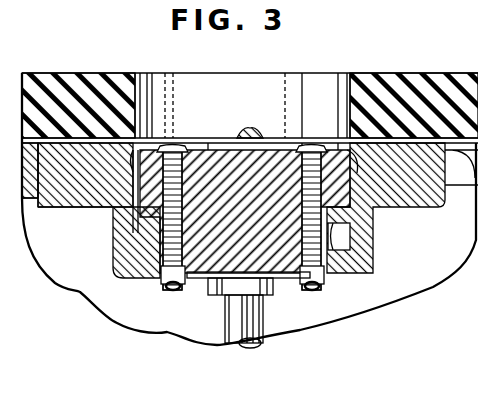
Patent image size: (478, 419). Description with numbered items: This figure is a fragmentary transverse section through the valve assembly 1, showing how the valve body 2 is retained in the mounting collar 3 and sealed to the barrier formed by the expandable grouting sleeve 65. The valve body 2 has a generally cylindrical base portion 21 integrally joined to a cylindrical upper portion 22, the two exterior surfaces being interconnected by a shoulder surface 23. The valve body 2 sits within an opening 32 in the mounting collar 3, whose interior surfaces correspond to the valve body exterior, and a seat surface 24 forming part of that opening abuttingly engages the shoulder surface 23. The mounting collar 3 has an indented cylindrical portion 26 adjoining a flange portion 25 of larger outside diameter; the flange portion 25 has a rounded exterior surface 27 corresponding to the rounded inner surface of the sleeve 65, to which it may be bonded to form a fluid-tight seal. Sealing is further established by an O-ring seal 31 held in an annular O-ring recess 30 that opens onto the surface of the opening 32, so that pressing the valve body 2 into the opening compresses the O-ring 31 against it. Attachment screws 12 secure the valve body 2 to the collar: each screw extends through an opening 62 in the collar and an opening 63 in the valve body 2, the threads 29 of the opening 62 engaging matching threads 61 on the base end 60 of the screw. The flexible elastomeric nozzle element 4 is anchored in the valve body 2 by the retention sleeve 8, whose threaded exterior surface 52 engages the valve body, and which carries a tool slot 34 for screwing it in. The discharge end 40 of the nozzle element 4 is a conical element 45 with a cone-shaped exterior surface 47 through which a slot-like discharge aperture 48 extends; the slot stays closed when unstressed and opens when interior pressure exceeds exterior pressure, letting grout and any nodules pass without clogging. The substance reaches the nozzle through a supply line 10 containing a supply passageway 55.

The valve assembly 1 is at (309, 72).
The valve body 2 is at (200, 142).
The mounting collar 3 is at (443, 268).
The nozzle element 4 is at (258, 132).
The retention sleeve 8 is at (217, 308).
The supply line 10 is at (233, 338).
The attachment screw 12 is at (180, 142).
The base portion 21 is at (157, 242).
The upper portion 22 is at (147, 202).
The shoulder surface 23 is at (343, 223).
The seat surface 24 is at (402, 208).
The flange portion 25 is at (37, 231).
The indented cylindrical portion 26 is at (110, 267).
The rounded exterior surface 27 is at (67, 140).
The threads 29 is at (167, 281).
The annular O-ring recess 30 is at (306, 141).
The O-ring seal 31 is at (153, 143).
The opening 32 is at (137, 142).
The tool slot 34 is at (250, 295).
The discharge end 40 is at (237, 130).
The conical element 45 is at (253, 132).
The exterior surface 47 is at (262, 138).
The discharge aperture 48 is at (210, 142).
The threaded exterior surface 52 is at (293, 279).
The supply passageway 55 is at (247, 352).
The base end 60 is at (167, 292).
The threads 61 is at (210, 277).
The opening 62 is at (163, 278).
The opening 63 is at (175, 218).
The expandable grouting sleeve 65 is at (43, 74).